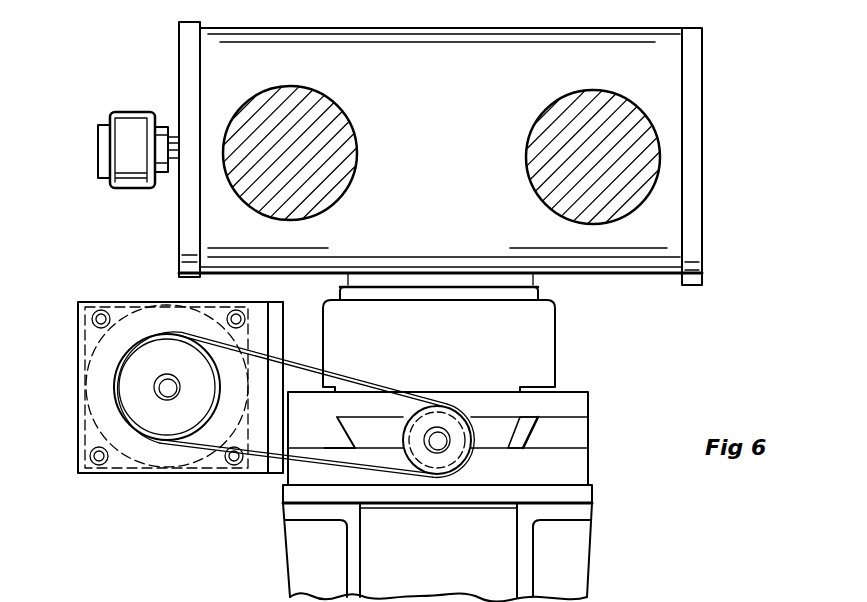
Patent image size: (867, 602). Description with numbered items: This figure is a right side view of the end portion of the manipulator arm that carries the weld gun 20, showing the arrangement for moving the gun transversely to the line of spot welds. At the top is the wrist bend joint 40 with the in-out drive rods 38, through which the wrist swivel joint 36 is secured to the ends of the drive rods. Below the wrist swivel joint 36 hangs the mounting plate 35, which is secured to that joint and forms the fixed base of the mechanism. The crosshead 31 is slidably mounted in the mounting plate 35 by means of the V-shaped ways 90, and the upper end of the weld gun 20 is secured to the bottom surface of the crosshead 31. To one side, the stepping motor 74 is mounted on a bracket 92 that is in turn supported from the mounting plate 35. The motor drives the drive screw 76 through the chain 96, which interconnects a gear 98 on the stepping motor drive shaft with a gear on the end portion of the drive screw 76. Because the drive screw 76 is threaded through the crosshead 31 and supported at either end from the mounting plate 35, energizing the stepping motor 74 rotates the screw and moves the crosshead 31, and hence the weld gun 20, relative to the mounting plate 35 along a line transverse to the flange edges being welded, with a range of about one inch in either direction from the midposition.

The weld gun 20 is at (590, 552).
The crosshead 31 is at (588, 465).
The mounting plate 35 is at (588, 412).
The wrist swivel joint 36 is at (549, 318).
The in-out drive rods 38 is at (525, 135).
The wrist bend joint 40 is at (388, 48).
The stepping motor 74 is at (97, 441).
The drive screw 76 is at (440, 440).
The V-shaped ways 90 is at (350, 430).
The bracket 92 is at (291, 318).
The chain 96 is at (260, 452).
The gear 98 is at (153, 428).